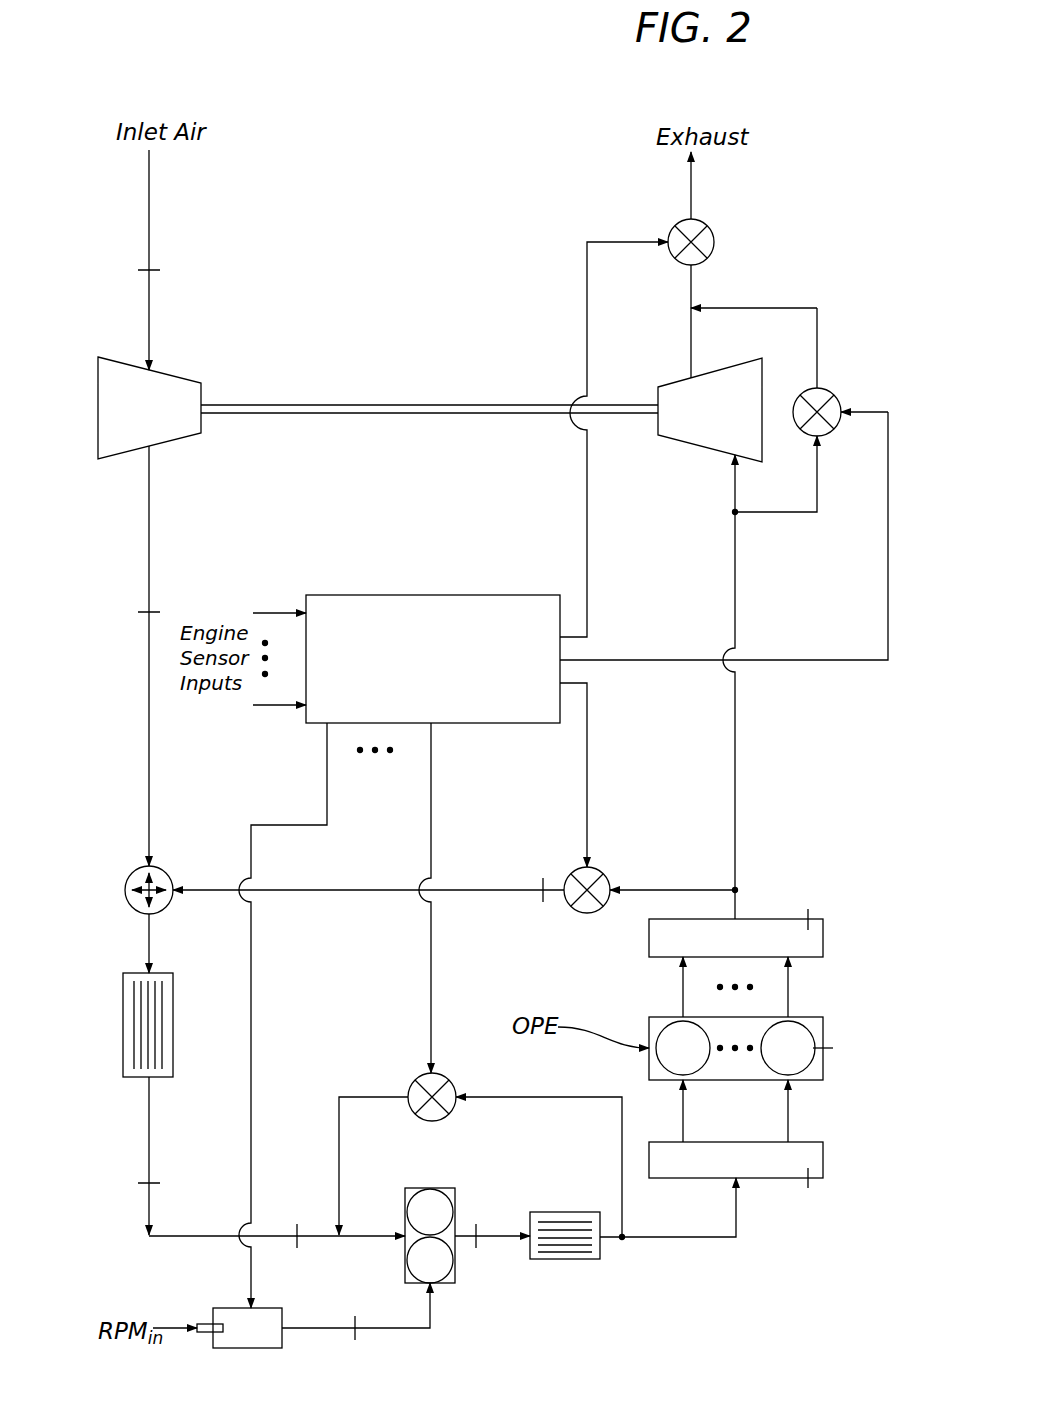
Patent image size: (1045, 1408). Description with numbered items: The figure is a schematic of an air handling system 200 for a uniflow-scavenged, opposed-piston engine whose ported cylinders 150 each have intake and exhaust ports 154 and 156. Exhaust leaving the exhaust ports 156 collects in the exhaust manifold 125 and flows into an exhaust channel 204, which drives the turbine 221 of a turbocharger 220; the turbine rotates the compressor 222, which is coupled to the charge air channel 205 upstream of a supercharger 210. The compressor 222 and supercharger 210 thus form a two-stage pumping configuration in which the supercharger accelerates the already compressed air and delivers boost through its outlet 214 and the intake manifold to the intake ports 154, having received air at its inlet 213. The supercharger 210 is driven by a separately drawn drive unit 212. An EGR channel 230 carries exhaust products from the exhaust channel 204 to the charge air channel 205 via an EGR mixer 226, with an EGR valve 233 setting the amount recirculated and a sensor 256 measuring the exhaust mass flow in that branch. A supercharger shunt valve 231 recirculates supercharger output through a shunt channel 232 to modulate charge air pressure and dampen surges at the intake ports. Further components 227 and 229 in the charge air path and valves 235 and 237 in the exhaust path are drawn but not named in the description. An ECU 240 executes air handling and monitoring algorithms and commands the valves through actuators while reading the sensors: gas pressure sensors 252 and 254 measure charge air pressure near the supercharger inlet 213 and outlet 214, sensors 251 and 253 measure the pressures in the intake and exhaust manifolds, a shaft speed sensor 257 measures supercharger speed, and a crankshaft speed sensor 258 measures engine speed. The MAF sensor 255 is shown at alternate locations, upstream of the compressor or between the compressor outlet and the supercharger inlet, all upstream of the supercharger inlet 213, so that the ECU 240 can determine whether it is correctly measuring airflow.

The air handling system 200 is at (298, 130).
The exhaust manifold 125 is at (768, 919).
The ported cylinders 150 is at (800, 1055).
The intake ports 154 is at (683, 1070).
The exhaust ports 156 is at (678, 1025).
The exhaust channel 204 is at (762, 615).
The charge air channel 205 is at (150, 560).
The supercharger 210 is at (445, 1283).
The drive unit 212 is at (215, 1308).
The supercharger inlet 213 is at (403, 1232).
The supercharger outlet 214 is at (457, 1232).
The turbocharger 220 is at (361, 335).
The turbine 221 is at (688, 455).
The compressor 222 is at (170, 368).
The EGR mixer 226 is at (133, 875).
The charge air cooler 227 is at (122, 1040).
The aftercooler 229 is at (570, 1260).
The EGR channel 230 is at (480, 882).
The supercharger shunt valve 231 is at (435, 1121).
The shunt channel 232 is at (535, 1097).
The EGR valve 233 is at (605, 878).
The exhaust valve 235 is at (830, 392).
The wastegate valve 237 is at (712, 235).
The ECU 240 is at (403, 595).
The intake pressure sensor 251 is at (810, 1190).
The supercharger intake pressure sensor 252 is at (297, 1225).
The exhaust pressure sensor 253 is at (810, 910).
The supercharger outlet pressure sensor 254 is at (480, 1248).
The MAF sensor 255 is at (155, 270).
The EGR mass flow sensor 256 is at (543, 880).
The supercharger shaft speed sensor 257 is at (356, 1330).
The crankshaft speed sensor 258 is at (823, 1035).